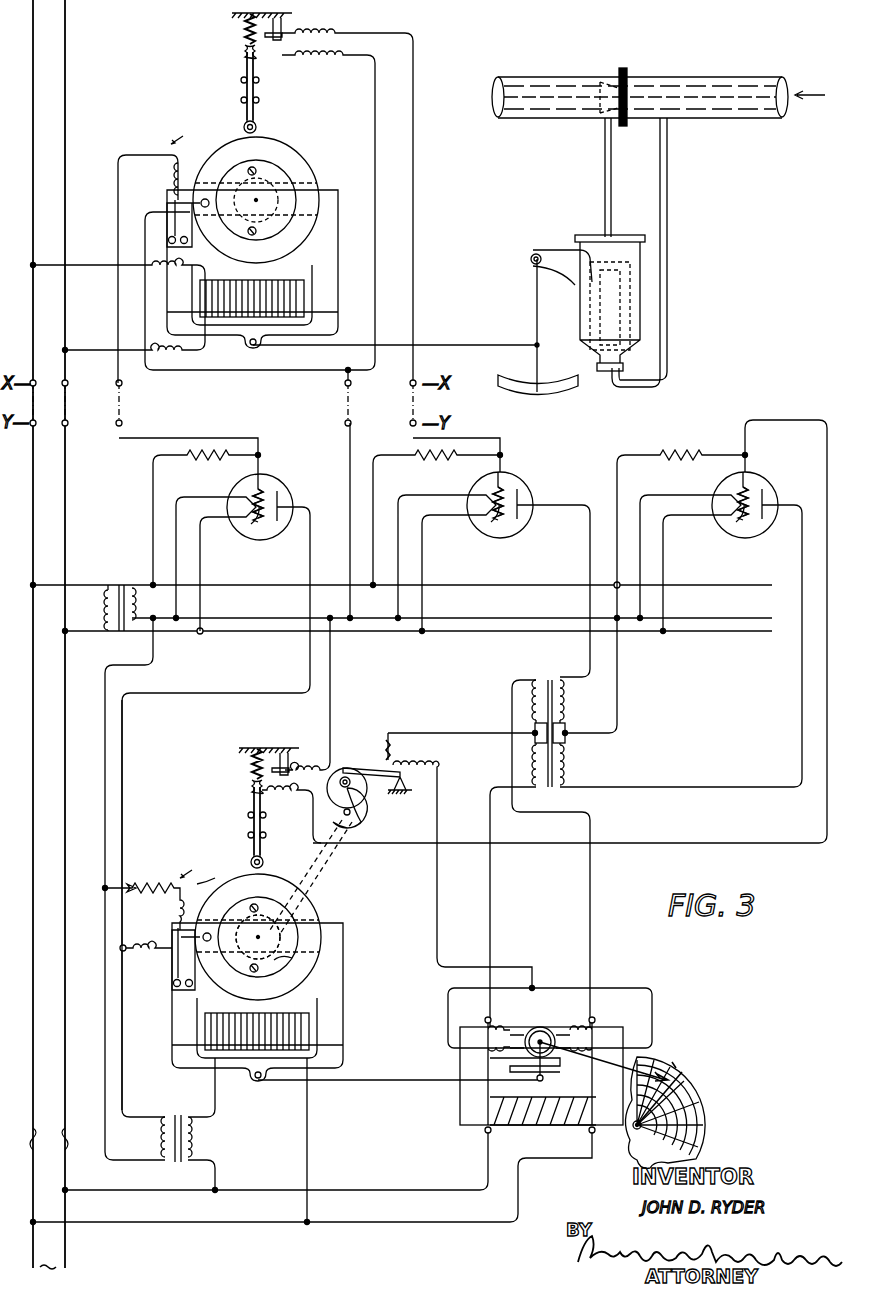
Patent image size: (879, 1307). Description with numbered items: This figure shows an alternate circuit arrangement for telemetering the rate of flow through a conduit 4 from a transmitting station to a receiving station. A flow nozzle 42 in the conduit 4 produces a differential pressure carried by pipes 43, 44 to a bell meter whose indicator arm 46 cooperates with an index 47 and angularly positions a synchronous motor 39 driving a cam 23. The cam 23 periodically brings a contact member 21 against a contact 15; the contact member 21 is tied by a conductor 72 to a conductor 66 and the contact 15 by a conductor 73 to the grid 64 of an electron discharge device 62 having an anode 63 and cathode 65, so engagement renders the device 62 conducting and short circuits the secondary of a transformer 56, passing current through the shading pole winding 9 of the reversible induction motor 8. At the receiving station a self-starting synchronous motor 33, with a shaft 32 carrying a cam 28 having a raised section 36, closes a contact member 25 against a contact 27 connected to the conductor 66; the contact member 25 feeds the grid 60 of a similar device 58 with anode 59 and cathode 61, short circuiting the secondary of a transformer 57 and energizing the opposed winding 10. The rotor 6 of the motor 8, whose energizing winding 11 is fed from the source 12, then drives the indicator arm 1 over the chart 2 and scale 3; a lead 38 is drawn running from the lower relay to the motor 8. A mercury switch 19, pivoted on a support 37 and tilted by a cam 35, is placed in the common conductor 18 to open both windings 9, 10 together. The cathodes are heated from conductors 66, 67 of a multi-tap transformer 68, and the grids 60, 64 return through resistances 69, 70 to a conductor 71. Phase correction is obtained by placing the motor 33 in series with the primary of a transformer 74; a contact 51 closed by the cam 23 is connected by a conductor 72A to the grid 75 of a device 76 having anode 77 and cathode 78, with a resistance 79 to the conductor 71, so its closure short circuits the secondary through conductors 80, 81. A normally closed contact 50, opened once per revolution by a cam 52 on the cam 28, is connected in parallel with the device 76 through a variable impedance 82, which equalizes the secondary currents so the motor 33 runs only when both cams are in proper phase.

The indicator arm 1 is at (604, 1068).
The time rotatable chart 2 is at (702, 1104).
The scale 3 is at (680, 1072).
The conduit 4 is at (702, 70).
The rotor 6 is at (532, 1026).
The reversible induction motor 8 is at (630, 1036).
The shading pole winding 9 is at (596, 1040).
The opposed shading pole winding 10 is at (490, 1066).
The energizing winding 11 is at (534, 1130).
The source 12 is at (49, 634).
The contact 15 is at (244, 44).
The common conductor 18 is at (437, 770).
The mercury switch 19 is at (378, 759).
The contact member 21 is at (244, 62).
The rotatable cam 23 is at (280, 140).
The contact member 25 is at (254, 792).
The contact 27 is at (254, 778).
The rotatable cam 28 is at (316, 896).
The shaft 32 is at (247, 906).
The self-starting synchronous motor 33 is at (356, 984).
The cam 35 is at (362, 812).
The raised section 36 is at (200, 884).
The support 37 is at (390, 779).
The lead 38 is at (372, 1076).
The synchronous motor 39 is at (339, 233).
The flow nozzle 42 is at (614, 72).
The pipe 43 is at (669, 180).
The pipe 44 is at (612, 175).
The indicator arm 46 is at (532, 310).
The index 47 is at (520, 402).
The contact 50 is at (170, 940).
The contact 51 is at (170, 210).
The cam 52 is at (289, 967).
The transformer 56 is at (551, 841).
The transformer 57 is at (527, 885).
The electron discharge device 58 is at (760, 468).
The anode 59 is at (770, 522).
The grid 60 is at (736, 509).
The cathode 61 is at (712, 528).
The electron discharge device 62 is at (516, 466).
The anode 63 is at (535, 518).
The grid 64 is at (490, 509).
The cathode 65 is at (468, 528).
The conductor 66 is at (510, 609).
The conductor 67 is at (510, 636).
The multi-tap transformer 68 is at (120, 596).
The resistance 69 is at (680, 438).
The resistance 70 is at (438, 466).
The conductor 71 is at (510, 577).
The conductor 72 is at (373, 158).
The conductor 72A is at (110, 338).
The conductor 73 is at (413, 150).
The transformer 74 is at (189, 1125).
The grid 75 is at (252, 512).
The electron discharge device 76 is at (279, 468).
The anode 77 is at (290, 525).
The cathode 78 is at (228, 523).
The resistance 79 is at (214, 466).
The conductor 80 is at (122, 822).
The conductor 81 is at (106, 836).
The variable impedance 82 is at (138, 880).